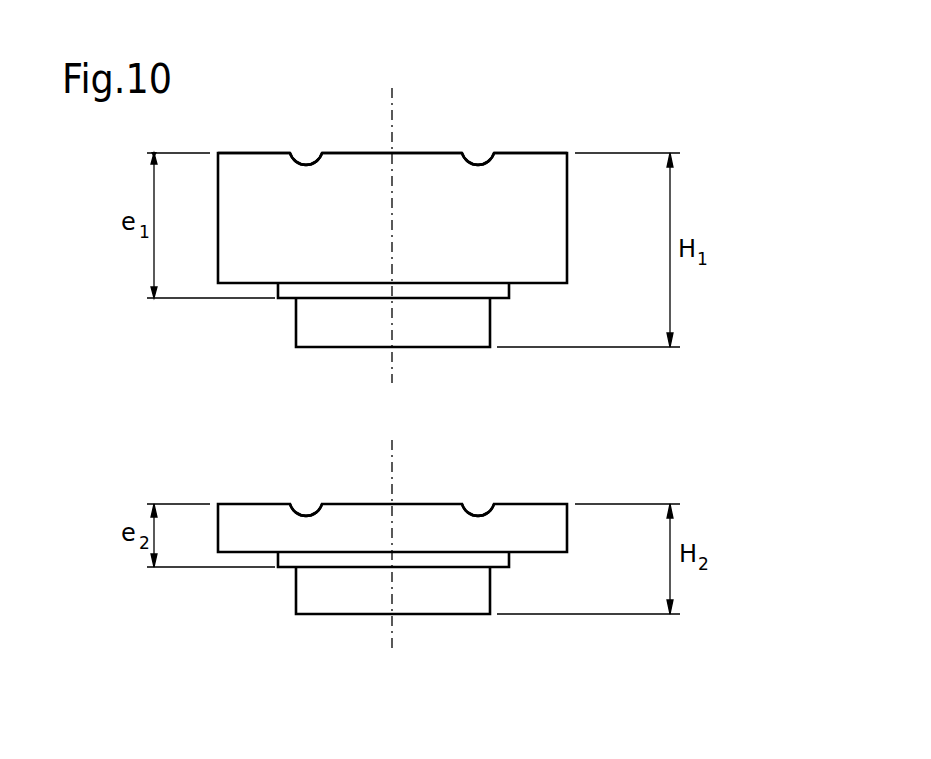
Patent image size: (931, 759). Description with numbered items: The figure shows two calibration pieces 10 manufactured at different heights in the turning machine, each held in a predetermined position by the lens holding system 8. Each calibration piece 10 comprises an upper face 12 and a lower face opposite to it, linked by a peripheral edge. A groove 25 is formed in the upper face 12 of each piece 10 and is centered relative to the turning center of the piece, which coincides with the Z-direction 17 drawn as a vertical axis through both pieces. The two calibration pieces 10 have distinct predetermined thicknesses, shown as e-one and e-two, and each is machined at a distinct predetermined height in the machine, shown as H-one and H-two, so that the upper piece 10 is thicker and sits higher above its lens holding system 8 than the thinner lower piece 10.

The lens holding system 8 is at (296, 320).
The calibration piece 10 is at (567, 213).
The upper face 12 is at (537, 153).
The Z-direction 17 is at (392, 92).
The groove 25 is at (306, 152).